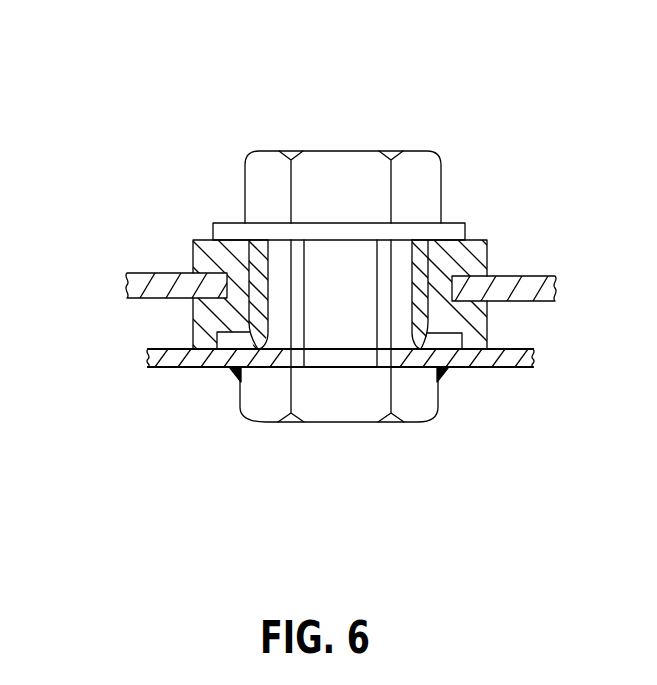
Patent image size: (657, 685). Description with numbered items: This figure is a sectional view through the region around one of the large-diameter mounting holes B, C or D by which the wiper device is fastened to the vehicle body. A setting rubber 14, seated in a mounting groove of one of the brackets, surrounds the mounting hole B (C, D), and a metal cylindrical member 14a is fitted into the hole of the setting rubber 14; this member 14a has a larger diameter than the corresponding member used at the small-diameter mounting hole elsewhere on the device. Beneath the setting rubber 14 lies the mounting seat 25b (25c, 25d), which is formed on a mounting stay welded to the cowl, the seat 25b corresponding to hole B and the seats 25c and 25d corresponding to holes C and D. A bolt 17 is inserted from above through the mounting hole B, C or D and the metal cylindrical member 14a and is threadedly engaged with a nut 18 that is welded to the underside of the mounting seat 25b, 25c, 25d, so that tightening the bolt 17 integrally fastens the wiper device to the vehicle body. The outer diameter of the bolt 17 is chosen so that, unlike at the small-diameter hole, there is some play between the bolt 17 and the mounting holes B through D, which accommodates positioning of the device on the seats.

The bolt 17 is at (337, 177).
The nut 18 is at (335, 403).
The setting rubber 14 is at (203, 323).
The metal cylindrical member 14a is at (420, 260).
The mounting seat 25b is at (198, 350).
The mounting seat 25c is at (340, 358).
The mounting seat 25d is at (340, 358).
The mounting hole B is at (402, 297).
The mounting hole C is at (340, 358).
The mounting hole D is at (340, 358).